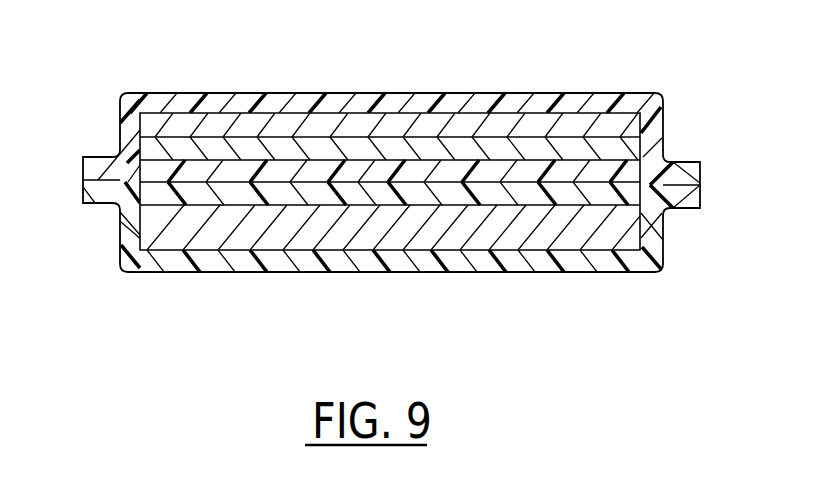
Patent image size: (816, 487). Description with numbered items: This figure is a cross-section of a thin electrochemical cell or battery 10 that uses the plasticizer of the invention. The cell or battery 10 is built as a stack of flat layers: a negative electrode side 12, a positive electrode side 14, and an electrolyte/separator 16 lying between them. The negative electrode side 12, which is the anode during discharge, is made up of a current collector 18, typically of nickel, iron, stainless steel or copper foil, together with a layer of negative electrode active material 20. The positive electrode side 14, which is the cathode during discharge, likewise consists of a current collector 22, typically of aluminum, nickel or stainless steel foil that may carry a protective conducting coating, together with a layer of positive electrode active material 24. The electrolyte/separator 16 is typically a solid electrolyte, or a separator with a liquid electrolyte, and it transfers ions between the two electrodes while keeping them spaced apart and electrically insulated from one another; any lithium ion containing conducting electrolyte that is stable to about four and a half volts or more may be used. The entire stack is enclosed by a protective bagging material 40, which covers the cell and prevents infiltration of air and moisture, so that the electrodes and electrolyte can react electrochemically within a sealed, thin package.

The electrochemical cell or battery 10 is at (771, 37).
The negative electrode side 12 is at (363, 95).
The positive electrode side 14 is at (312, 252).
The electrolyte/separator 16 is at (603, 165).
The current collector 18 is at (498, 118).
The negative electrode active material 20 is at (150, 148).
The current collector 22 is at (157, 230).
The positive electrode active material 24 is at (620, 203).
The protective bagging material 40 is at (633, 265).